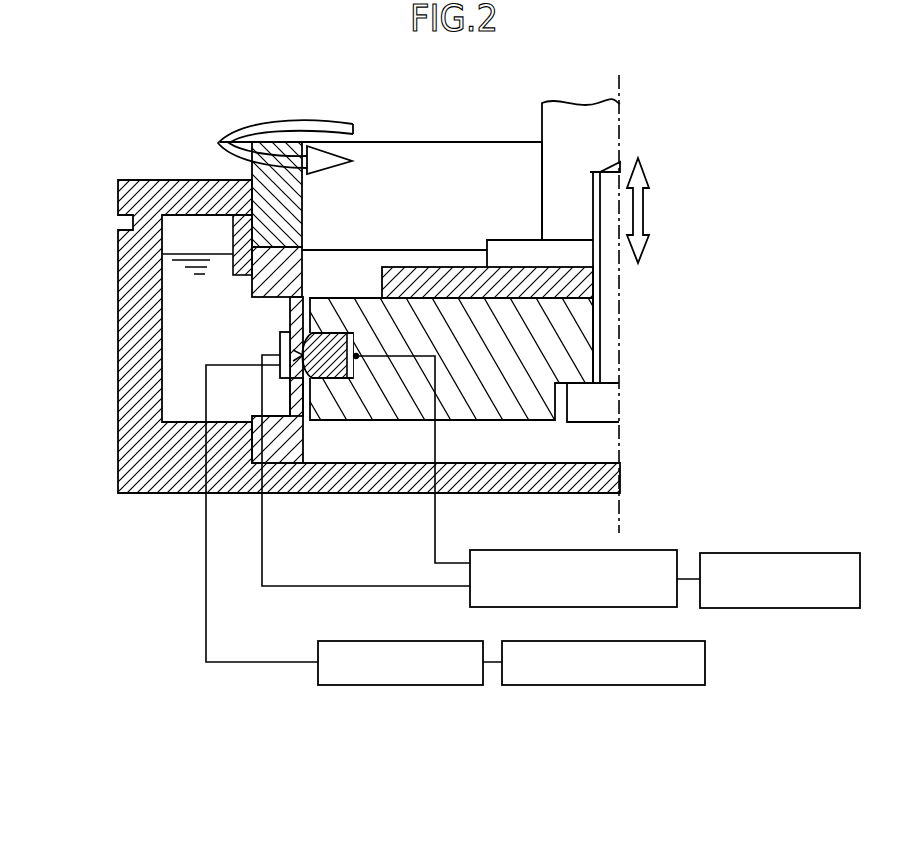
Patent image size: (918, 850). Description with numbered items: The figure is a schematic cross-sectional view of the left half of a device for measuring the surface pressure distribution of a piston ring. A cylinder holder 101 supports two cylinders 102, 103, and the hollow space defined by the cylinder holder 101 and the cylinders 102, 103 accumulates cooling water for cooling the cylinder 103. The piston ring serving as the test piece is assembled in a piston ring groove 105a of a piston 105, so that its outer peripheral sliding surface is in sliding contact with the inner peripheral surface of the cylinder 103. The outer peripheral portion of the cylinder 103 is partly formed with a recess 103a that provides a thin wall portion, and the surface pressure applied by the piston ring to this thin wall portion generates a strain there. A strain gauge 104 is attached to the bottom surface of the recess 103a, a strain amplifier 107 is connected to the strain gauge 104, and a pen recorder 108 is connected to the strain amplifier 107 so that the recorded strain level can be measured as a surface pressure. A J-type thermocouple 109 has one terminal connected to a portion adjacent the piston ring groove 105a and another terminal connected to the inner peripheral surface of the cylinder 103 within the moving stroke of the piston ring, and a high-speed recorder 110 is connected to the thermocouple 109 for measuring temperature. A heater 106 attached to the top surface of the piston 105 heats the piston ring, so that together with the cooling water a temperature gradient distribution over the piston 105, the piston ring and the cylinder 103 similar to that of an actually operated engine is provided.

The cylinder holder 101 is at (115, 442).
The cylinder 102 is at (252, 172).
The cylinder 103 is at (277, 450).
The recess 103a is at (292, 387).
The strain gauge 104 is at (280, 347).
The piston 105 is at (580, 357).
The piston ring groove 105a is at (332, 333).
The heater 106 is at (582, 284).
The strain amplifier 107 is at (353, 685).
The pen recorder 108 is at (550, 685).
The J-type thermocouple 109 is at (640, 550).
The high-speed recorder 110 is at (813, 553).